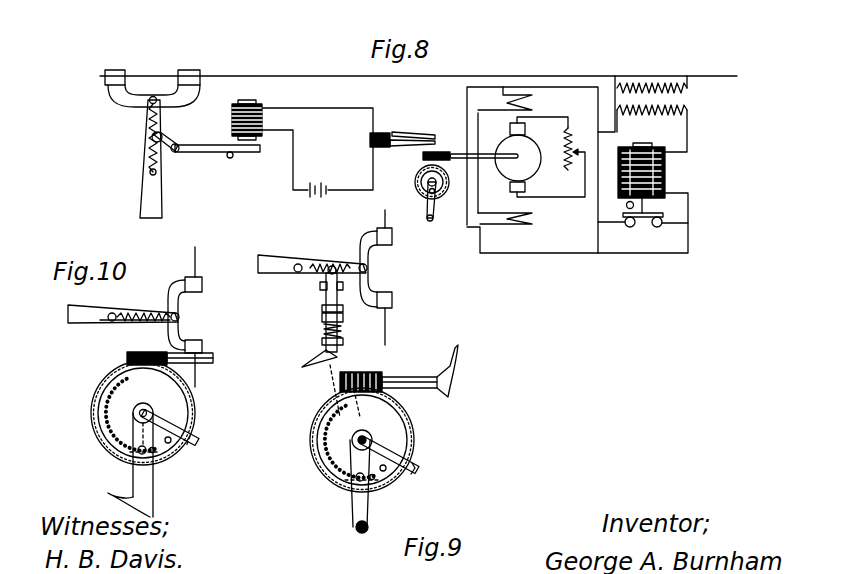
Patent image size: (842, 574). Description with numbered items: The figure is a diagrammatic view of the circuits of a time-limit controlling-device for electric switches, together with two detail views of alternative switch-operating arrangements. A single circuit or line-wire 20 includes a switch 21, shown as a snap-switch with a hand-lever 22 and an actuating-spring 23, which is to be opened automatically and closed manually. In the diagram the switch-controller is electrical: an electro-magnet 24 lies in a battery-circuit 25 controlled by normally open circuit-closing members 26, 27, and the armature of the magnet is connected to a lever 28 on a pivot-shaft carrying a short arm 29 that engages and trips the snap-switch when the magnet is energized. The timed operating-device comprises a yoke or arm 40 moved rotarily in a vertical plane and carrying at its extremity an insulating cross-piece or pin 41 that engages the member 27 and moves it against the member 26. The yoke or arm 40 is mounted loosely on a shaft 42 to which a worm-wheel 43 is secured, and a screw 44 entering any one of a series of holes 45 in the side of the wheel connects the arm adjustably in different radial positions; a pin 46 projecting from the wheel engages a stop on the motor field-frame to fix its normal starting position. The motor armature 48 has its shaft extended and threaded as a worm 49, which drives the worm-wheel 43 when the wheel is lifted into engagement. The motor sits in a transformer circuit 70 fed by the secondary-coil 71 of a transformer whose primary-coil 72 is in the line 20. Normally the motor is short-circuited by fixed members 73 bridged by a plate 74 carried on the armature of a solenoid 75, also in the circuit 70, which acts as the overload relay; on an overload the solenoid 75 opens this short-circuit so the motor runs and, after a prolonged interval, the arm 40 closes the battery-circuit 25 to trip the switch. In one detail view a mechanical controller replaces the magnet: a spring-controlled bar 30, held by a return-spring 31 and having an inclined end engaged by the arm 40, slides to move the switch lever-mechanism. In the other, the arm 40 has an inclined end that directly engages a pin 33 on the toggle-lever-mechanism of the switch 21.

In FIG. 8, the circuit or line-wire 20 is at (253, 80).
In FIG. 9, the circuit or line-wire 20 is at (390, 330).
In FIG. 10, the circuit or line-wire 20 is at (197, 264).
In FIG. 8, the switch 21 is at (125, 98).
In FIG. 9, the switch 21 is at (376, 268).
In FIG. 10, the switch 21 is at (170, 287).
In FIG. 8, the hand-lever 22 is at (160, 212).
In FIG. 9, the hand-lever 22 is at (270, 263).
In FIG. 10, the hand-lever 22 is at (73, 318).
In FIG. 8, the actuating-spring 23 is at (152, 148).
In FIG. 9, the actuating-spring 23 is at (322, 258).
In FIG. 10, the actuating-spring 23 is at (131, 314).
In FIG. 8, the electro-magnet 24 is at (237, 118).
In FIG. 8, the battery-circuit 25 is at (328, 108).
In FIG. 8, the circuit-closing member 26 is at (400, 133).
In FIG. 8, the circuit-closing member 27 is at (405, 150).
In FIG. 8, the lever 28 is at (293, 172).
In FIG. 8, the short arm 29 is at (172, 130).
In FIG. 9, the spring-controlled bar 30 is at (326, 295).
In FIG. 9, the return-spring 31 is at (325, 327).
In FIG. 10, the pin 33 is at (140, 325).
In FIG. 8, the yoke or arm 40 is at (436, 212).
In FIG. 9, the yoke or arm 40 is at (360, 505).
In FIG. 10, the yoke or arm 40 is at (130, 465).
In FIG. 8, the cross-piece or pin 41 is at (430, 221).
In FIG. 9, the cross-piece or pin 41 is at (368, 527).
In FIG. 8, the shaft 42 is at (429, 185).
In FIG. 9, the shaft 42 is at (372, 440).
In FIG. 10, the shaft 42 is at (153, 412).
In FIG. 8, the worm-wheel 43 is at (415, 180).
In FIG. 9, the worm-wheel 43 is at (332, 403).
In FIG. 10, the worm-wheel 43 is at (95, 403).
In FIG. 8, the screw 44 is at (430, 194).
In FIG. 9, the screw 44 is at (357, 478).
In FIG. 10, the screw 44 is at (140, 451).
In FIG. 9, the holes 45 is at (325, 452).
In FIG. 10, the holes 45 is at (98, 430).
In FIG. 9, the pin 46 is at (419, 464).
In FIG. 10, the pin 46 is at (193, 437).
In FIG. 8, the armature 48 is at (519, 157).
In FIG. 9, the armature 48 is at (425, 375).
In FIG. 10, the armature 48 is at (213, 352).
In FIG. 8, the worm 49 is at (440, 150).
In FIG. 9, the worm 49 is at (363, 373).
In FIG. 10, the worm 49 is at (152, 352).
In FIG. 8, the transformer circuit 70 is at (593, 254).
In FIG. 8, the secondary-coil 71 is at (687, 110).
In FIG. 8, the primary-coil 72 is at (652, 88).
In FIG. 8, the fixed members 73 is at (630, 227).
In FIG. 8, the plate 74 is at (647, 227).
In FIG. 8, the solenoid 75 is at (665, 173).